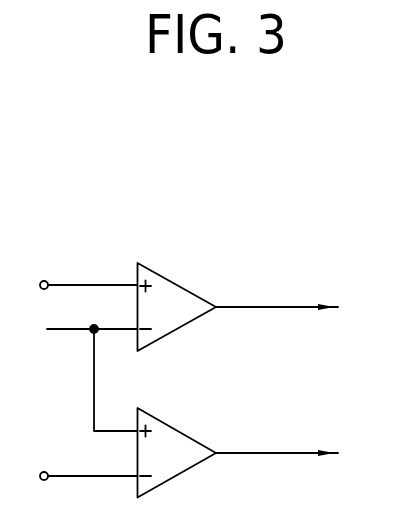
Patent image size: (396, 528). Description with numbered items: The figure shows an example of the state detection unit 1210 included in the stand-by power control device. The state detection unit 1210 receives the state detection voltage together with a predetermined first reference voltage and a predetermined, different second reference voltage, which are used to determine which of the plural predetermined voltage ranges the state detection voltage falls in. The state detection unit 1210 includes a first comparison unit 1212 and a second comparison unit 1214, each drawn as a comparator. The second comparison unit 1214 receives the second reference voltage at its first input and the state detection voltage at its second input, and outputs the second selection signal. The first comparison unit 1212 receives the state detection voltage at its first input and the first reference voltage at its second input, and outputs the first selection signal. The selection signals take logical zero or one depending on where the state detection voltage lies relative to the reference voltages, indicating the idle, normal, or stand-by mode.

The state detection unit 1210 is at (238, 196).
The second comparison unit 1214 is at (187, 289).
The first comparison unit 1212 is at (189, 432).